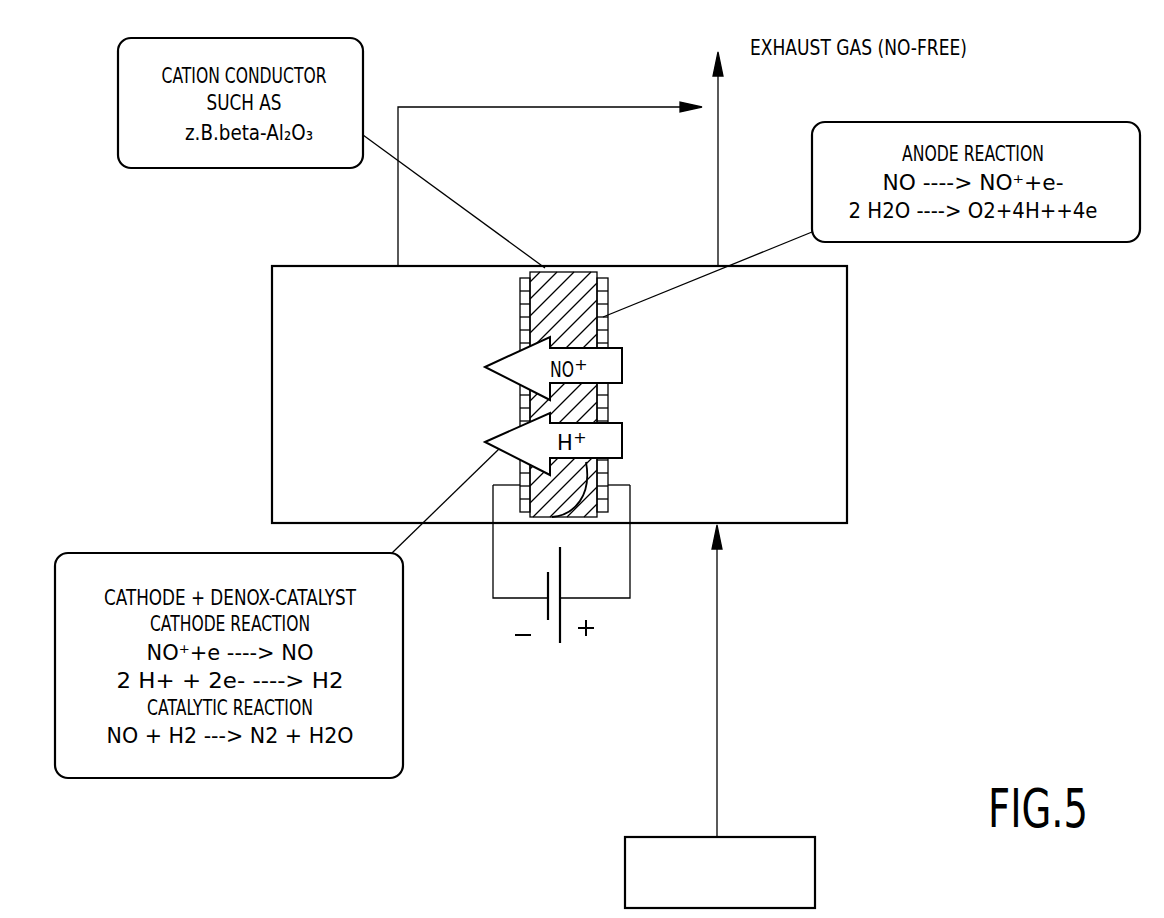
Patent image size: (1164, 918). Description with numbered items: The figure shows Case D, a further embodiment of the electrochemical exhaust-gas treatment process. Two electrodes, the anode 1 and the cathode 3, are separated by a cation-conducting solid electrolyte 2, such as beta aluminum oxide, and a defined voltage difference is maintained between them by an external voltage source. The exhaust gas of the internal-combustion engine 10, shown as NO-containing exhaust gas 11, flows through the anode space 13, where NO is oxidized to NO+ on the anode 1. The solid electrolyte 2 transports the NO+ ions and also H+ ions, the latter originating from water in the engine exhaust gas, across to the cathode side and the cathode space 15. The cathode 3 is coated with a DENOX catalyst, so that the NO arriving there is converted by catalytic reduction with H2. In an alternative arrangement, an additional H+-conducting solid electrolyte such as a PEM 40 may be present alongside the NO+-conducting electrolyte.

The anode 1 is at (608, 333).
The cation-conducting solid electrolyte 2 is at (574, 287).
The cathode 3 is at (520, 300).
The internal-combustion engine 10 is at (625, 872).
The NO-containing exhaust gas 11 is at (890, 585).
The anode space 13 is at (815, 403).
The cathode space 15 is at (295, 385).
The PEM (Proton Exchange Membrane) 40 is at (545, 519).